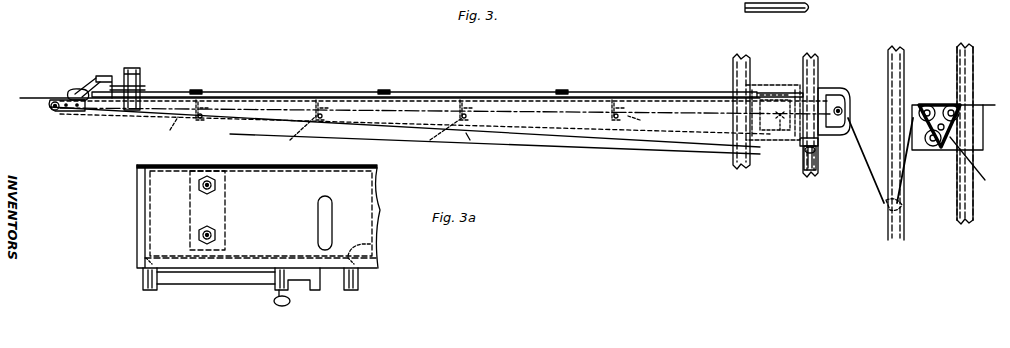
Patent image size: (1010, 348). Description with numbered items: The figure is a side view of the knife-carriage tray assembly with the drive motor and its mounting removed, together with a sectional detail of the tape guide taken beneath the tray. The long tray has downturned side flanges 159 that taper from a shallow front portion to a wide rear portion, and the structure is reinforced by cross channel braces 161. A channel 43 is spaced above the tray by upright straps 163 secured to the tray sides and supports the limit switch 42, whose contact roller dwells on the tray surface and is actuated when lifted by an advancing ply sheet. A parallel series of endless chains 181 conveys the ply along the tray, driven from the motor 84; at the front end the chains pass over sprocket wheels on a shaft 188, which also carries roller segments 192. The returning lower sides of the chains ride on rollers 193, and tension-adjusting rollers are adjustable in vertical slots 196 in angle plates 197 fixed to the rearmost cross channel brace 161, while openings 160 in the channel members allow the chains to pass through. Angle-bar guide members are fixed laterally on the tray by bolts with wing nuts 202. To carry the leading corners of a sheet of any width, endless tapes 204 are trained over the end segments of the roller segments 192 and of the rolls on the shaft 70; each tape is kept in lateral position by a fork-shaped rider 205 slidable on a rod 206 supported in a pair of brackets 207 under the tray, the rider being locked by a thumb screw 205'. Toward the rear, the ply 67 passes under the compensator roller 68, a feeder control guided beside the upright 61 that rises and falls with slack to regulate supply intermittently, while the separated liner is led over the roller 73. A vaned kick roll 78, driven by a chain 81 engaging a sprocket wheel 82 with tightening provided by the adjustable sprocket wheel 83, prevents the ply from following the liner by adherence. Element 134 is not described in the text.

In FIG. 3, the limit switch 42 is at (105, 75).
In FIG. 3, the channel 43 is at (130, 66).
In FIG. 3, the upright 61 is at (888, 72).
In FIG. 3, the ply 67 is at (870, 164).
In FIG. 3, the compensator roller 68 is at (904, 205).
In FIG. 3, the shaft 70 is at (978, 112).
In FIG. 3, the roller 73 is at (957, 128).
In FIG. 3, the kick roll 78 is at (930, 146).
In FIG. 3, the chain 81 is at (948, 104).
In FIG. 3, the sprocket wheel 82 is at (928, 104).
In FIG. 3, the adjustable sprocket wheel 83 is at (958, 106).
In FIG. 3, the motor 84 is at (790, 13).
In FIG. 3, the plate 134 is at (773, 112).
In FIG. 3, the side flange 159 is at (566, 106).
In FIG. 3A, the opening 160 is at (328, 205).
In FIG. 3, the cross channel brace 161 is at (202, 120).
In FIG. 3A, the cross channel brace 161 is at (372, 244).
In FIG. 3, the upright strap 163 is at (140, 86).
In FIG. 3, the endless chain 181 is at (380, 124).
In FIG. 3, the shaft 188 is at (88, 70).
In FIG. 3, the roller segment 192 is at (50, 106).
In FIG. 3, the roller 193 is at (407, 134).
In FIG. 3, the vertical slot 196 is at (784, 122).
In FIG. 3, the angle plate 197 is at (798, 92).
In FIG. 3, the wing nut 202 is at (198, 92).
In FIG. 3, the endless tape 204 is at (475, 145).
In FIG. 3A, the fork-shaped rider 205 is at (311, 288).
In FIG. 3, the thumb screw 205' is at (790, 171).
In FIG. 3A, the thumb screw 205' is at (261, 301).
In FIG. 3, the rod 206 is at (802, 146).
In FIG. 3A, the rod 206 is at (180, 284).
In FIG. 3, the bracket 207 is at (818, 156).
In FIG. 3A, the bracket 207 is at (140, 290).